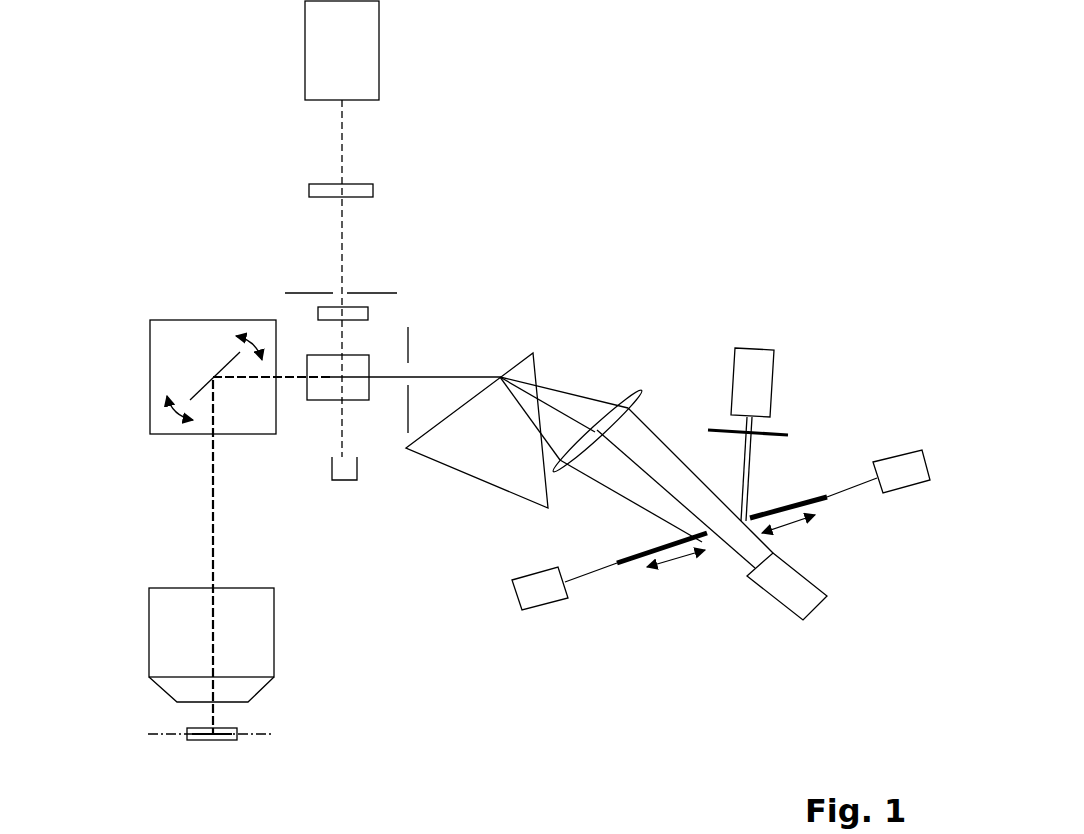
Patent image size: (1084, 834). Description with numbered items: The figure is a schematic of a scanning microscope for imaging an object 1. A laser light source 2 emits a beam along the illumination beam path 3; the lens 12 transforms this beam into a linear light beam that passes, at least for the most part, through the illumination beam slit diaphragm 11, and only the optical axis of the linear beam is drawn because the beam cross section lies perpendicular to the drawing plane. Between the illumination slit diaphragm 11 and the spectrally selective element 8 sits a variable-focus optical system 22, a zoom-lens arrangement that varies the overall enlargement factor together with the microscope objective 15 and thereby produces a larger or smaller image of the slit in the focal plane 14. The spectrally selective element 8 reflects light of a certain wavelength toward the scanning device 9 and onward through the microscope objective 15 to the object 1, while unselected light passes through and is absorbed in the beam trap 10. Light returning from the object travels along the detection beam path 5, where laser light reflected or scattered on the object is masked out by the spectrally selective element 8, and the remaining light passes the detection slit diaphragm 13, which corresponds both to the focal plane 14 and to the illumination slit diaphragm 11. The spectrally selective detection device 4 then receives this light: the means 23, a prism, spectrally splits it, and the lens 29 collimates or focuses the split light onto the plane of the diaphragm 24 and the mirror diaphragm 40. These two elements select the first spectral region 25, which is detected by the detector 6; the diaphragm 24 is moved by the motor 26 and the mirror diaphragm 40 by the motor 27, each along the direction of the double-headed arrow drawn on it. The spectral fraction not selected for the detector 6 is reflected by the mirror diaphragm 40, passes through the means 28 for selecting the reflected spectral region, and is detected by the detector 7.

The object 1 is at (198, 733).
The light source 2 is at (333, 59).
The illumination beam path 3 is at (342, 133).
The spectrally selective detection device 4 is at (528, 535).
The detection beam path 5 is at (431, 377).
The detector 6 is at (797, 583).
The detector 7 is at (742, 377).
The spectrally selective element 8 is at (323, 390).
The scanning device 9 is at (200, 381).
The beam trap 10 is at (340, 483).
The illumination beam slit diaphragm 11 is at (333, 293).
The lens 12 is at (373, 190).
The detection slit diaphragm 13 is at (408, 413).
The focal plane 14 is at (258, 732).
The microscope objective 15 is at (175, 615).
The variable-focus optical system 22 is at (368, 313).
The means for spectrally splitting 23 is at (483, 462).
The diaphragm 24 is at (637, 563).
The first spectral region 25 is at (723, 535).
The motor 26 is at (545, 598).
The motor 27 is at (907, 483).
The means for selecting the reflected spectral region 28 is at (778, 428).
The lens 29 is at (641, 392).
The mirror diaphragm 40 is at (783, 510).